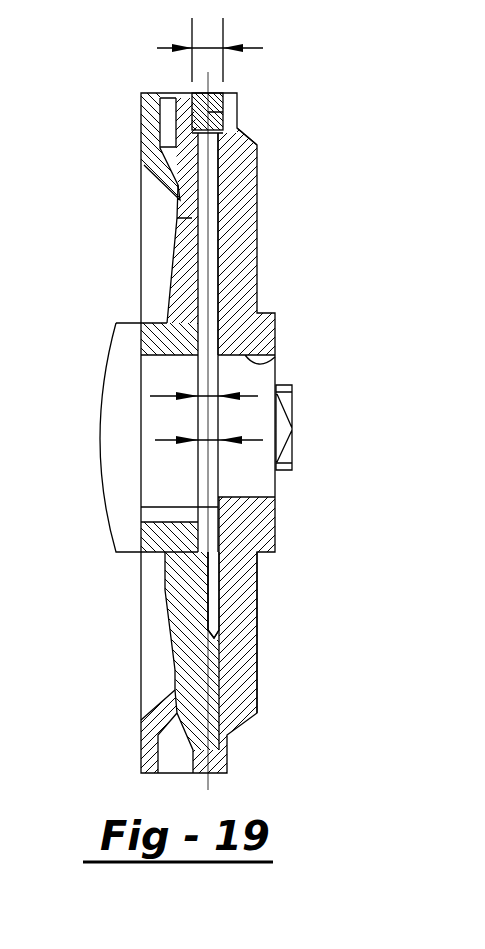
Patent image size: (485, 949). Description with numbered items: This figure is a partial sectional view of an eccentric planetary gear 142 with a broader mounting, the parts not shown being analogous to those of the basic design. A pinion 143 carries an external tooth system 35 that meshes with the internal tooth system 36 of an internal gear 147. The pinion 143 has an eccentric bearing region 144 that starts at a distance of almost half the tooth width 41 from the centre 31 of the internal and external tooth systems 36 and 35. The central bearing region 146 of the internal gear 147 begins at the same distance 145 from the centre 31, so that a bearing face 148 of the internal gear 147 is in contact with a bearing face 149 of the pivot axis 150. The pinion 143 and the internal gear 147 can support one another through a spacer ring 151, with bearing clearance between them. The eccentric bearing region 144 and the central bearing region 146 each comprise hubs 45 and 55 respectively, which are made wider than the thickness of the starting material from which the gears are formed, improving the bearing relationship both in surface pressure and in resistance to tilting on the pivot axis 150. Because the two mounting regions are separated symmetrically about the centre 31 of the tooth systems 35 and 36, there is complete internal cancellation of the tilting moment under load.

The tooth width 41 is at (212, 43).
The internal tooth system 36 is at (215, 115).
The external tooth system 35 is at (248, 138).
The hub assembly 142 is at (128, 203).
The internal gear 147 is at (240, 212).
The pinion 143 is at (183, 293).
The centre 31 is at (224, 287).
The eccentric bearing region 144 is at (167, 360).
The central bearing region 146 is at (273, 365).
The distance 145 is at (202, 396).
The pivot axis 150 is at (157, 452).
The bearing face 148 is at (141, 508).
The bearing face 149 is at (275, 514).
The hub 55 is at (185, 550).
The hub 45 is at (205, 512).
The spacer ring 151 is at (180, 553).